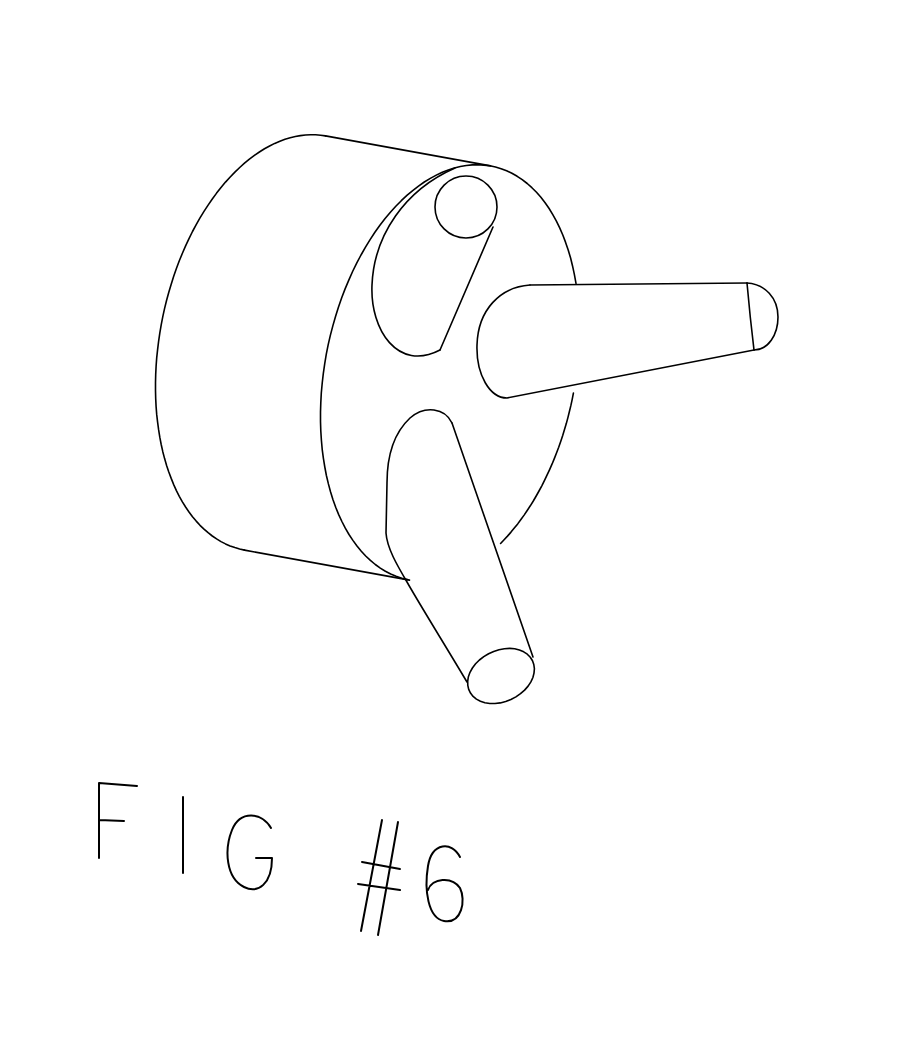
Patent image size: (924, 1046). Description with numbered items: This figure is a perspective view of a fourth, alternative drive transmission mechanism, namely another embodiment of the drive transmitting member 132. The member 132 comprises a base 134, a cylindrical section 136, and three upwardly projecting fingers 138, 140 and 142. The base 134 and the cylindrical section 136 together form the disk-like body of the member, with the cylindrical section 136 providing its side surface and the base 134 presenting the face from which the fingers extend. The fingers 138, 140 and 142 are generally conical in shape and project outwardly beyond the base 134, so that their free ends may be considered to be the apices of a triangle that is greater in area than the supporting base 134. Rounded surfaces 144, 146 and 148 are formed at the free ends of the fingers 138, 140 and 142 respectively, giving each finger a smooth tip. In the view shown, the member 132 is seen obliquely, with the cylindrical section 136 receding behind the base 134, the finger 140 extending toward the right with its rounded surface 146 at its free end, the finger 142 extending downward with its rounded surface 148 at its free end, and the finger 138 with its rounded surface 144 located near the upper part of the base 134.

The drive transmitting member 132 is at (387, 317).
The base 134 is at (522, 428).
The cylindrical section 136 is at (222, 452).
The upwardly projecting finger 138 is at (412, 228).
The upwardly projecting finger 140 is at (680, 268).
The upwardly projecting finger 142 is at (551, 557).
The rounded surface 144 is at (468, 183).
The rounded surface 146 is at (768, 300).
The rounded surface 148 is at (518, 673).